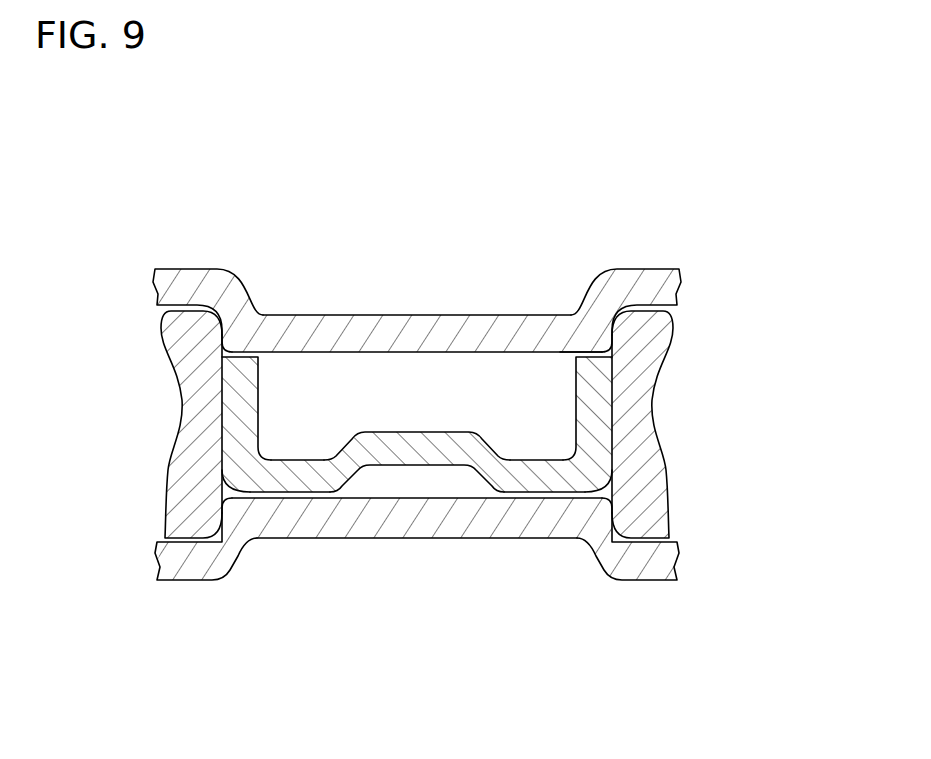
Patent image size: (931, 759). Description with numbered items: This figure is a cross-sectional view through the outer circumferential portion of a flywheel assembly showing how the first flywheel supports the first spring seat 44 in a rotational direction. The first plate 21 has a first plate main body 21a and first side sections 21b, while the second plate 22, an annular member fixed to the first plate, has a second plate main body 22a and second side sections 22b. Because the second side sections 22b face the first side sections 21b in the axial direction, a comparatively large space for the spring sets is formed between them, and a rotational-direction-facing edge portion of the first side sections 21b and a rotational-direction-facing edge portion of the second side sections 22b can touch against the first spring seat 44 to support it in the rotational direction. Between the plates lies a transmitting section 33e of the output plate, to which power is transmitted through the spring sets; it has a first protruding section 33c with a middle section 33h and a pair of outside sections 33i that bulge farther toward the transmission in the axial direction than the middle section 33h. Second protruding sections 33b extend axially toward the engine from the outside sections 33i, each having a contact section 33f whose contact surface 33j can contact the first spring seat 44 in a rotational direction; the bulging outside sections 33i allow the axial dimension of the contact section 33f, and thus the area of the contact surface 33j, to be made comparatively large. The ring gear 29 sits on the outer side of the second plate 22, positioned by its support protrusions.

The first plate 21 is at (267, 291).
The first plate main body 21a is at (433, 330).
The first side section 21b is at (185, 282).
The second plate 22 is at (608, 590).
The second plate main body 22a is at (366, 520).
The second side section 22b is at (186, 565).
The ring gear 29 is at (146, 310).
The second protruding section 33b is at (211, 454).
The first protruding section 33c is at (476, 493).
The transmitting section 33e is at (578, 335).
The contact section 33f is at (240, 374).
The middle section 33h is at (417, 448).
The outside section 33i is at (290, 478).
The contact surface 33j is at (222, 423).
The first spring seat 44 is at (155, 530).